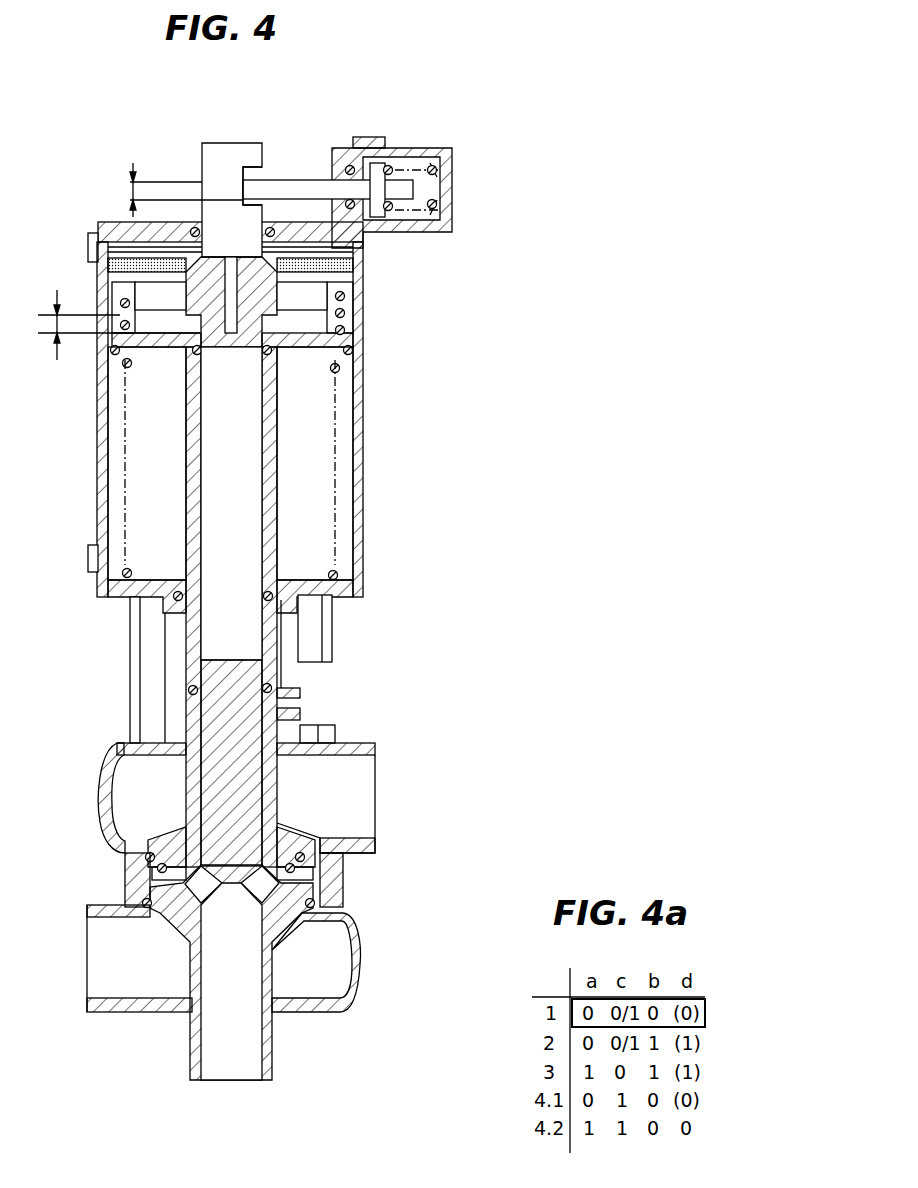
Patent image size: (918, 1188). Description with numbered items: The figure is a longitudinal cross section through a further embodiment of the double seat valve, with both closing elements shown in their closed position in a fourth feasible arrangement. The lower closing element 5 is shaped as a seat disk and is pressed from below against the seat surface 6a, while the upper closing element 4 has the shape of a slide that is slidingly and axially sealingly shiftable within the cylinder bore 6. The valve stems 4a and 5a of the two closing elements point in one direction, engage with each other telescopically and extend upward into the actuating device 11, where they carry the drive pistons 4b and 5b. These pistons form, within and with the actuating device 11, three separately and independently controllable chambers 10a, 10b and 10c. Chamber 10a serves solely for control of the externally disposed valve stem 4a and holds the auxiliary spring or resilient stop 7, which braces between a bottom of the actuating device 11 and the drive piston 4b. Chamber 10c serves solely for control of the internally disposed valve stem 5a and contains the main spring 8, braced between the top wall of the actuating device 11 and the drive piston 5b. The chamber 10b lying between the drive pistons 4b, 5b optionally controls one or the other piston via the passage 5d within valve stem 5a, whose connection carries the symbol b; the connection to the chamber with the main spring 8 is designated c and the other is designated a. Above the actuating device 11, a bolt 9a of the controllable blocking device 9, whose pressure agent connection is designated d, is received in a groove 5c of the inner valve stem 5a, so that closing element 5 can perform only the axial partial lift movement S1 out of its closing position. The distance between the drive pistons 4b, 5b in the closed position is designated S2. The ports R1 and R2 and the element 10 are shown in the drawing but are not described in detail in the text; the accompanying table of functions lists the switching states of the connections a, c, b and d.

The actuating device 11 is at (58, 210).
The controllable blocking device 9 is at (466, 140).
The bolt 9a is at (316, 185).
The pressure agent connection d is at (372, 137).
The connection symbol for passage to chamber 10b b is at (232, 143).
The groove 5c is at (251, 202).
The axial partial lift movement S1 is at (167, 190).
The drive piston 5b is at (98, 240).
The fluid connection of chamber 10a a is at (88, 250).
The chamber 10a is at (118, 258).
The drive piston 4b is at (100, 378).
The fluid connection of chamber 10c c is at (88, 557).
The piston 10 is at (165, 350).
The closing element 5 is at (176, 915).
The passage 5d is at (228, 335).
The auxiliary spring or resilient stop 7 is at (120, 303).
The chamber 10b is at (174, 305).
The distance between drive pistons S2 is at (110, 325).
The main spring 8 is at (127, 455).
The chamber 10c is at (135, 503).
The port R1 is at (312, 703).
The valve stem 5a is at (205, 770).
The valve stem 4a is at (192, 797).
The closing element 4 is at (165, 840).
The cylinder bore 6 is at (150, 868).
The seat surface 6a is at (138, 905).
The port R2 is at (134, 926).